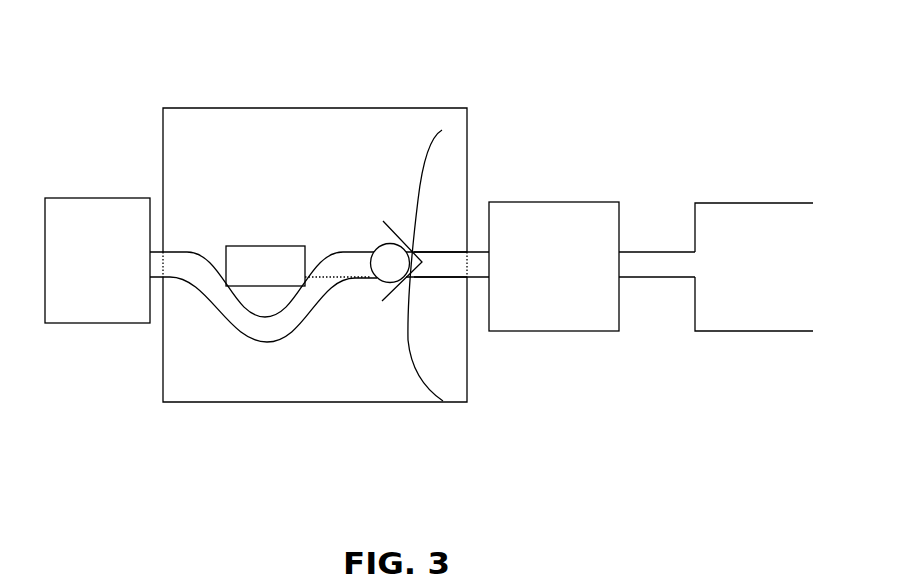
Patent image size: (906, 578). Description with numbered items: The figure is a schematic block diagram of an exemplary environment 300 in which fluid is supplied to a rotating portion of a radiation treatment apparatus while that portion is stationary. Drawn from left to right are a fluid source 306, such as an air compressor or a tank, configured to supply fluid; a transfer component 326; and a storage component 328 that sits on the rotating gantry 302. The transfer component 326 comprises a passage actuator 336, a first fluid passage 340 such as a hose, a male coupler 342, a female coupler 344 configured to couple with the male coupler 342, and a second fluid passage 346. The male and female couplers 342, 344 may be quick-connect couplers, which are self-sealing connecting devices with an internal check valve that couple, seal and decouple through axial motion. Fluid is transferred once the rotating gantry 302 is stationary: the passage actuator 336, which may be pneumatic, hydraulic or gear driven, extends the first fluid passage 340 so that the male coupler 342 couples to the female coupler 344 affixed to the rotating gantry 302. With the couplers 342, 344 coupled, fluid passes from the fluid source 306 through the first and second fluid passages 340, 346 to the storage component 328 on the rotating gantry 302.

The environment 300 is at (126, 39).
The rotating gantry 302 is at (424, 365).
The fluid source 306 is at (128, 198).
The transfer component 326 is at (247, 108).
The storage component 328 is at (542, 202).
The passage actuator 336 is at (263, 246).
The first fluid passage 340 is at (234, 331).
The male coupler 342 is at (378, 243).
The female coupler 344 is at (401, 287).
The second fluid passage 346 is at (441, 252).